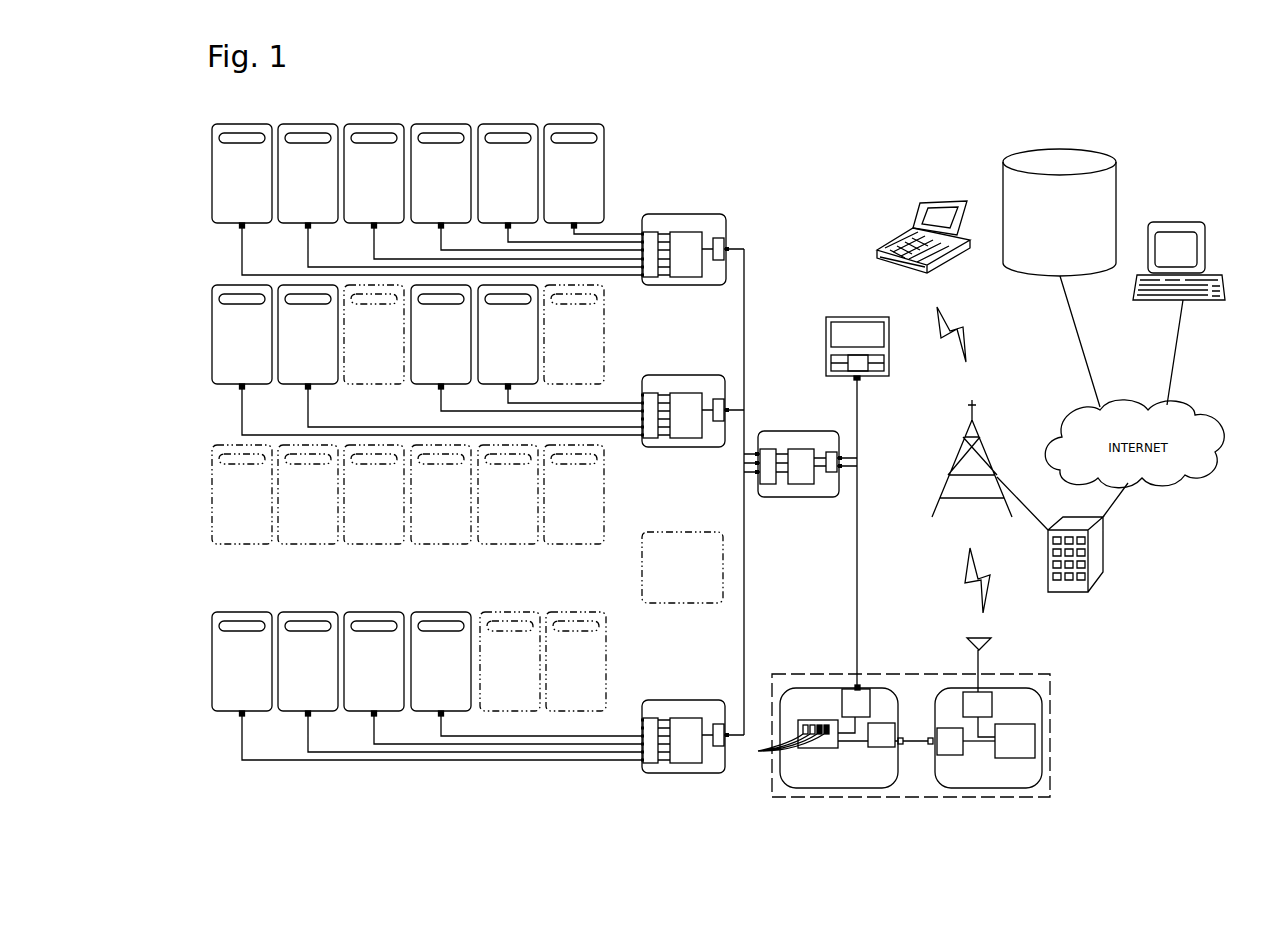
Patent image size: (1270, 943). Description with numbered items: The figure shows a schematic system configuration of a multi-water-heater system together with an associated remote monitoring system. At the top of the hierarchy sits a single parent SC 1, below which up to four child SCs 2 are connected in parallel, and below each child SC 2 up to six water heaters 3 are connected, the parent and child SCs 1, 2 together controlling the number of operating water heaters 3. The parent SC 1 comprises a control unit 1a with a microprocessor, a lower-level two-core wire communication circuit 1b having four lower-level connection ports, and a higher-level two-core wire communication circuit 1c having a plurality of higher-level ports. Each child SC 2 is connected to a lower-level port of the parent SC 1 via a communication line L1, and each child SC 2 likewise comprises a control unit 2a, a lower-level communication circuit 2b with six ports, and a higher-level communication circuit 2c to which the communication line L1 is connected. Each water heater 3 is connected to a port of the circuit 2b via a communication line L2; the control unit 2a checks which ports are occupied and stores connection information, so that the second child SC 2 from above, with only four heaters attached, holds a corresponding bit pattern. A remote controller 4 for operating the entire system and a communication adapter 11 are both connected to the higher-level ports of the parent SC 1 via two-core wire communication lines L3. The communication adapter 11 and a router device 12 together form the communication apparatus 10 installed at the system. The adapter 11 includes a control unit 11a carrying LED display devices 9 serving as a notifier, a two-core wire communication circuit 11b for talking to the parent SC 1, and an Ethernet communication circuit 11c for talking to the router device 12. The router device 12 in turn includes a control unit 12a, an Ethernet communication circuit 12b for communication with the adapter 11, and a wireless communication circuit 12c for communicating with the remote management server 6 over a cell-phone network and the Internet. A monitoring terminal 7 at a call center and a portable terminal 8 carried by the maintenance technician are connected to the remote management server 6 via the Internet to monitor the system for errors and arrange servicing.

The parent SC 1 is at (807, 459).
The control unit 1a is at (800, 485).
The hierarchically lower-level two-core wire communication circuit 1b is at (765, 486).
The hierarchically higher-level two-core wire communication circuit 1c is at (830, 474).
The child SC 2 is at (688, 483).
The control unit 2a is at (690, 278).
The hierarchically lower-level two-core wire communication circuit 2b is at (650, 281).
The hierarchically higher-level two-core wire communication circuit 2c is at (718, 262).
The water heater 3 is at (615, 136).
The remote controller 4 is at (868, 316).
The remote management server 6 is at (1060, 146).
The monitoring terminal 7 is at (1188, 210).
The portable terminal 8 is at (945, 190).
The LED display devices 9 is at (784, 747).
The communication apparatus 10 is at (944, 709).
The communication adapter 11 is at (854, 709).
The control unit 11a is at (822, 720).
The two-core wire communication circuit 11b is at (866, 695).
The 10BASE-T/100BASE-TX communication circuit 11c is at (884, 727).
The router device 12 is at (1025, 729).
The control unit 12a is at (1035, 745).
The 10BASE-T/100BASE-TX communication circuit 12b is at (955, 757).
The 3G wireless communication circuit 12c is at (990, 705).
The communication line L1 is at (748, 410).
The communication line L2 is at (612, 230).
The two-core wire communication line L3 is at (862, 490).